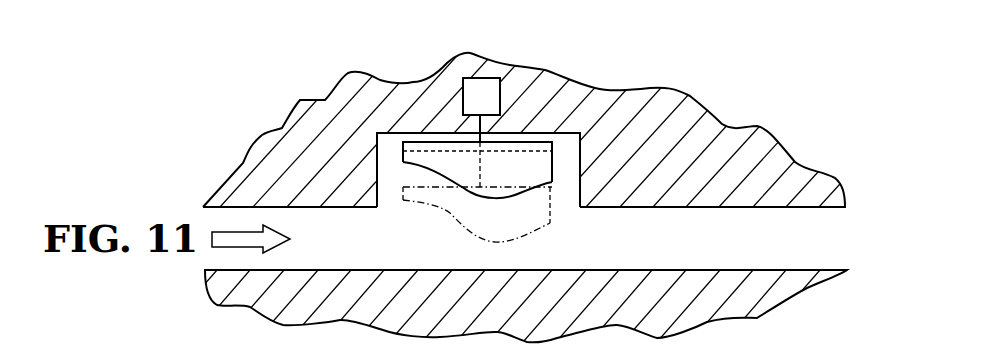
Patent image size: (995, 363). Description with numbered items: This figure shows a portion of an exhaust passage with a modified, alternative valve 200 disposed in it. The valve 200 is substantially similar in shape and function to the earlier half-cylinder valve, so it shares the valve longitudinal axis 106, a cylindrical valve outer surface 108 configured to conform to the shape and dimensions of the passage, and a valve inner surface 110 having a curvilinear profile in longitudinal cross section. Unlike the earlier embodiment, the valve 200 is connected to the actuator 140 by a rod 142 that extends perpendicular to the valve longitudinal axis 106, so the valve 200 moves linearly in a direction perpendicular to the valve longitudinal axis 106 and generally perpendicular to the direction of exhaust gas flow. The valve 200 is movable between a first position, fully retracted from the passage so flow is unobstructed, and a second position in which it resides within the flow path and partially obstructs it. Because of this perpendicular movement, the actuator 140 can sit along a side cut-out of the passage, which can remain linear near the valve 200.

The valve longitudinal axis 106 is at (420, 140).
The valve outer surface 108 is at (537, 149).
The valve inner surface 110 is at (530, 188).
The actuator 140 is at (490, 88).
The rod 142 is at (480, 120).
The alternative valve 200 is at (550, 158).